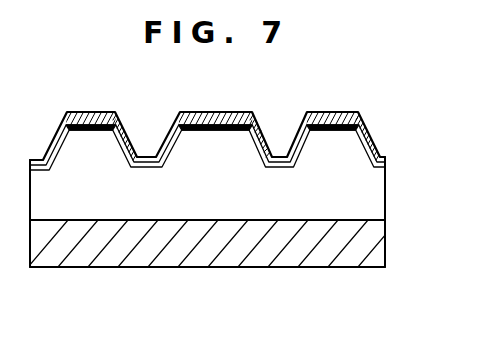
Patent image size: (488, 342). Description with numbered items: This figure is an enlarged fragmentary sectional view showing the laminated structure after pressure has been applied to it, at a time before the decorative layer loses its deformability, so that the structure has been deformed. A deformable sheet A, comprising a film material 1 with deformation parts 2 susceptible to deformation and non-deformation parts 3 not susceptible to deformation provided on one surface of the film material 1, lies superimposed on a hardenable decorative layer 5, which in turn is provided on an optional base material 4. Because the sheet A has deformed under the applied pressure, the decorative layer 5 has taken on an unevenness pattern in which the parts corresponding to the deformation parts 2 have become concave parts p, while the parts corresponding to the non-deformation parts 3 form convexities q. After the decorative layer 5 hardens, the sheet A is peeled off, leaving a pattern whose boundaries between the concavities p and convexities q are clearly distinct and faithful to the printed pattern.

The film material 1 is at (361, 118).
The deformation parts 2 is at (40, 158).
The non-deformation parts 3 is at (328, 125).
The base material 4 is at (208, 262).
The decorative layer 5 is at (30, 205).
The concavities p is at (277, 173).
The convexities q is at (205, 130).
The deformable sheet A is at (2, 120).